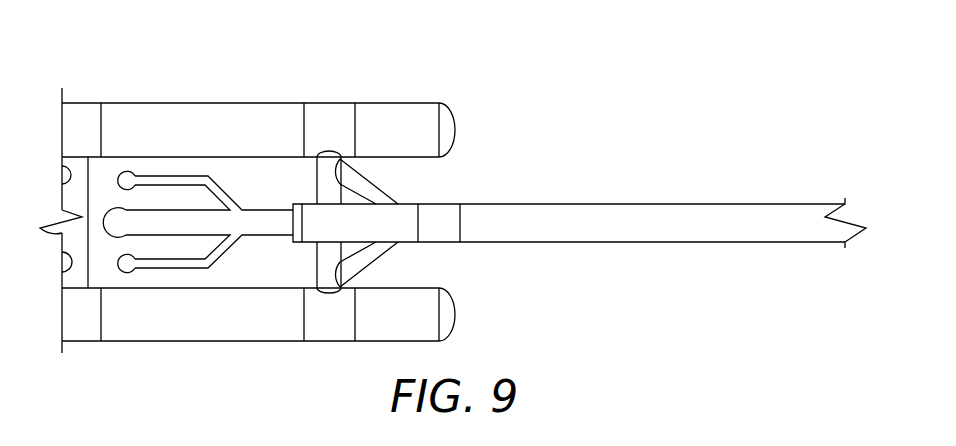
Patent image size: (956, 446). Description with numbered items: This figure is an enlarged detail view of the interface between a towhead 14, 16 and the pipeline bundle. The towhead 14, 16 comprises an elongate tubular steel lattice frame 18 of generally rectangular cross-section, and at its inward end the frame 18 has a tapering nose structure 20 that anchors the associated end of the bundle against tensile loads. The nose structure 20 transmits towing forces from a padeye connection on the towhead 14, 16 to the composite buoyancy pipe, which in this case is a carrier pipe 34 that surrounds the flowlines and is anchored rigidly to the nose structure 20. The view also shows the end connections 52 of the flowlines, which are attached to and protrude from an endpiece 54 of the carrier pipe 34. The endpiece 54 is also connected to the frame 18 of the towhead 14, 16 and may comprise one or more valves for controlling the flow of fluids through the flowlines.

The towhead 14 is at (116, 73).
The towhead 16 is at (247, 220).
The frame 18 is at (235, 112).
The nose structure 20 is at (363, 187).
The carrier pipe 34 is at (672, 213).
The end connections 52 is at (163, 176).
The endpiece 54 is at (292, 205).